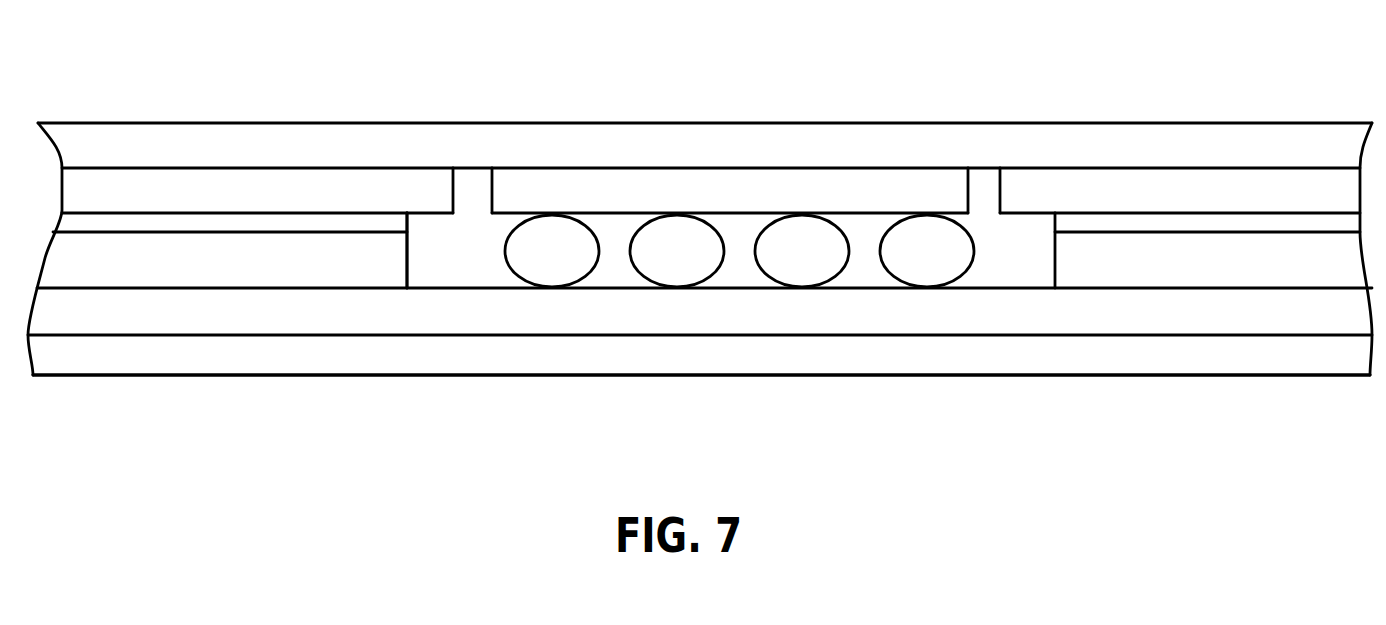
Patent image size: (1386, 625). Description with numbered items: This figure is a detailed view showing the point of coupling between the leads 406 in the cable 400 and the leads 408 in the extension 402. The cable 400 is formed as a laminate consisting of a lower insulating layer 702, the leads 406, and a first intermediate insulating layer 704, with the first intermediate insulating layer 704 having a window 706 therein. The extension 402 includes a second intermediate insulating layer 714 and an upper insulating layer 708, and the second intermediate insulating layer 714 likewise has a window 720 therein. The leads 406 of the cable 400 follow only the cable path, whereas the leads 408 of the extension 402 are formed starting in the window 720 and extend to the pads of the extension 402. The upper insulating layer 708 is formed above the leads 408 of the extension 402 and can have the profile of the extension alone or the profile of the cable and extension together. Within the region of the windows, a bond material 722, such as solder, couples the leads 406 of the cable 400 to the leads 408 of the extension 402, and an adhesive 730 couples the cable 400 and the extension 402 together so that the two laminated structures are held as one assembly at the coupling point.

The cable 400 is at (630, 378).
The extension 402 is at (597, 121).
The leads 406 is at (432, 318).
The leads 408 is at (715, 197).
The lower insulating layer 702 is at (857, 355).
The first intermediate insulating layer 704 is at (210, 262).
The window 706 is at (407, 263).
The upper insulating layer 708 is at (265, 155).
The second intermediate insulating layer 714 is at (137, 198).
The window 720 is at (460, 188).
The bond material 722 is at (785, 262).
The adhesive 730 is at (73, 223).